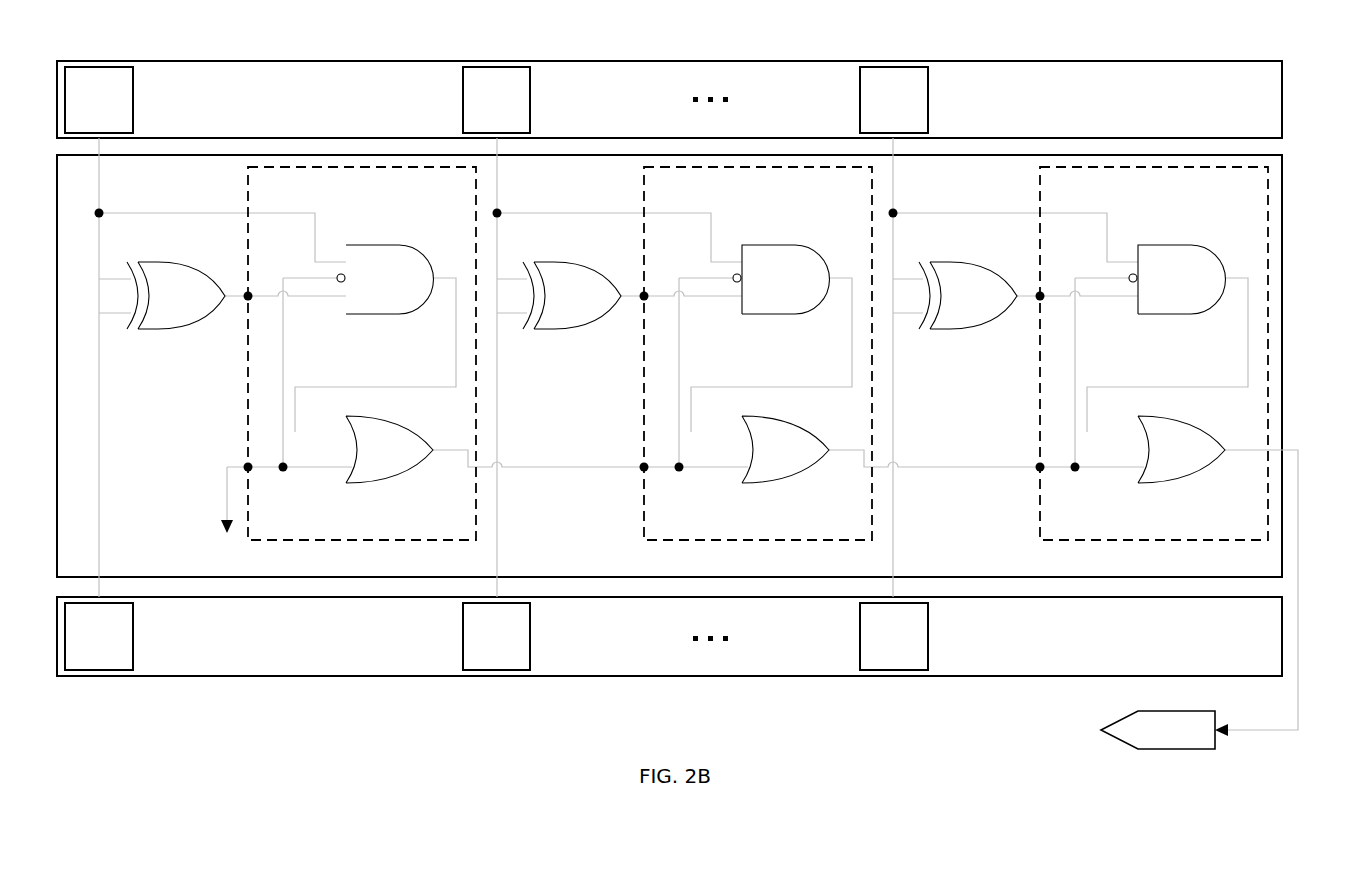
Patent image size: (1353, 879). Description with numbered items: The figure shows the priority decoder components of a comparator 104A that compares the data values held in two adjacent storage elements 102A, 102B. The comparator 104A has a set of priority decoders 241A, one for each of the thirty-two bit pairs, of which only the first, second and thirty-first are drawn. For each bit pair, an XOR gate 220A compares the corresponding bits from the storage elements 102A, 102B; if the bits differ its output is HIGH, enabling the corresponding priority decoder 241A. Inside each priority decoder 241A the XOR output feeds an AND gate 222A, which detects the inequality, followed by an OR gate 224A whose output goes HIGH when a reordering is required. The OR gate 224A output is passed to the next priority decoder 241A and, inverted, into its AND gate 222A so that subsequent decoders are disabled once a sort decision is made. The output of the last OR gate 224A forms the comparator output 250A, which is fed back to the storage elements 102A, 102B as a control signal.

The storage element 102A is at (669, 99).
The storage element 102B is at (669, 636).
The comparator 104A is at (1283, 169).
The XOR gate 220A is at (572, 295).
The AND gate 222A is at (781, 279).
The OR gate 224A is at (785, 449).
The priority decoder 241A is at (758, 353).
The comparator output 250A is at (1164, 730).